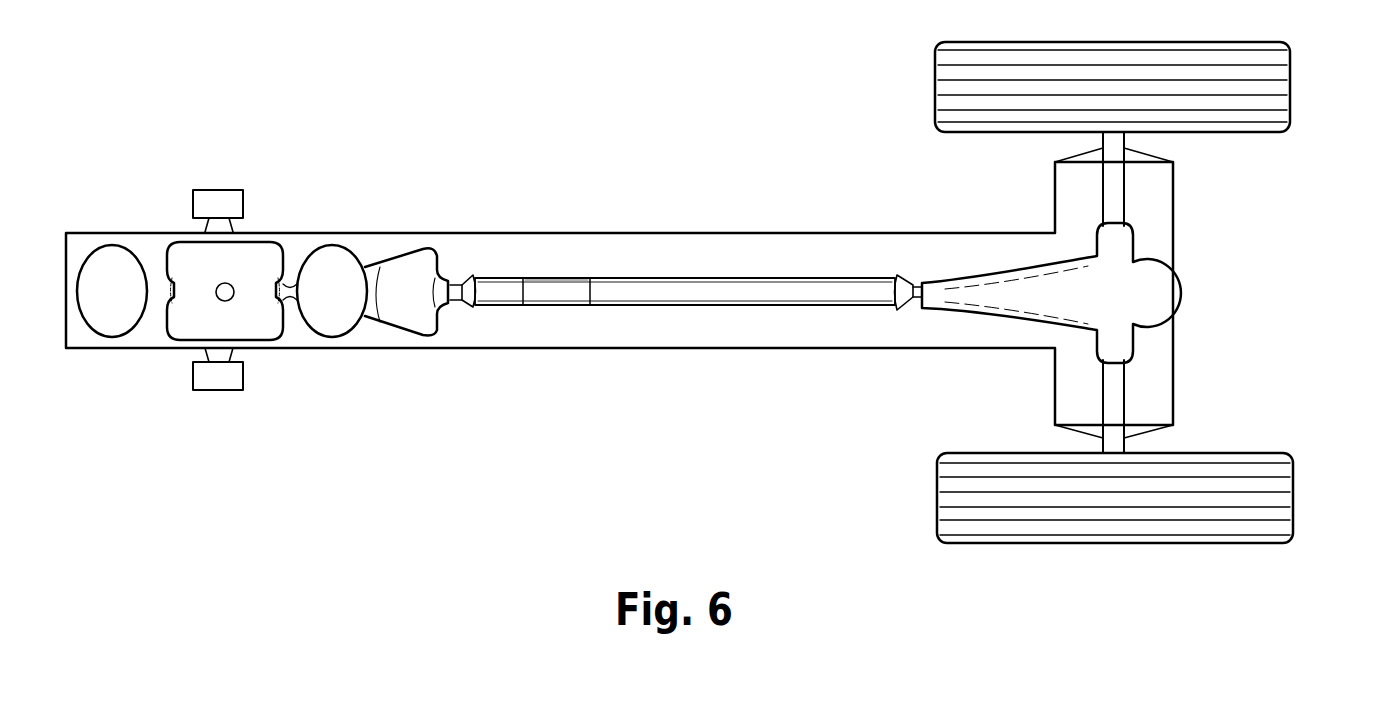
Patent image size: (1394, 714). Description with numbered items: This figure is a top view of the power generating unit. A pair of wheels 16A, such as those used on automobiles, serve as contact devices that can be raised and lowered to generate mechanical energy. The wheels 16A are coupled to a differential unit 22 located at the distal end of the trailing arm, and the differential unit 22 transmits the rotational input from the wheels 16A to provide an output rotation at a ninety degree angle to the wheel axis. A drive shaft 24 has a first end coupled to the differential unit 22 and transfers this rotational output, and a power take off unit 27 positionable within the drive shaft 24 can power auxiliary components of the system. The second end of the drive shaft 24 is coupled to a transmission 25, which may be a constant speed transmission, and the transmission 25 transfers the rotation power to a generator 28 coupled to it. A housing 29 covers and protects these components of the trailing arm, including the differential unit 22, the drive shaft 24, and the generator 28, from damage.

The wheels 16A is at (1290, 88).
The differential unit 22 is at (1143, 295).
The drive shaft 24 is at (660, 293).
The transmission 25 is at (377, 267).
The power take off unit 27 is at (555, 307).
The generator 28 is at (262, 336).
The housing 29 is at (545, 233).